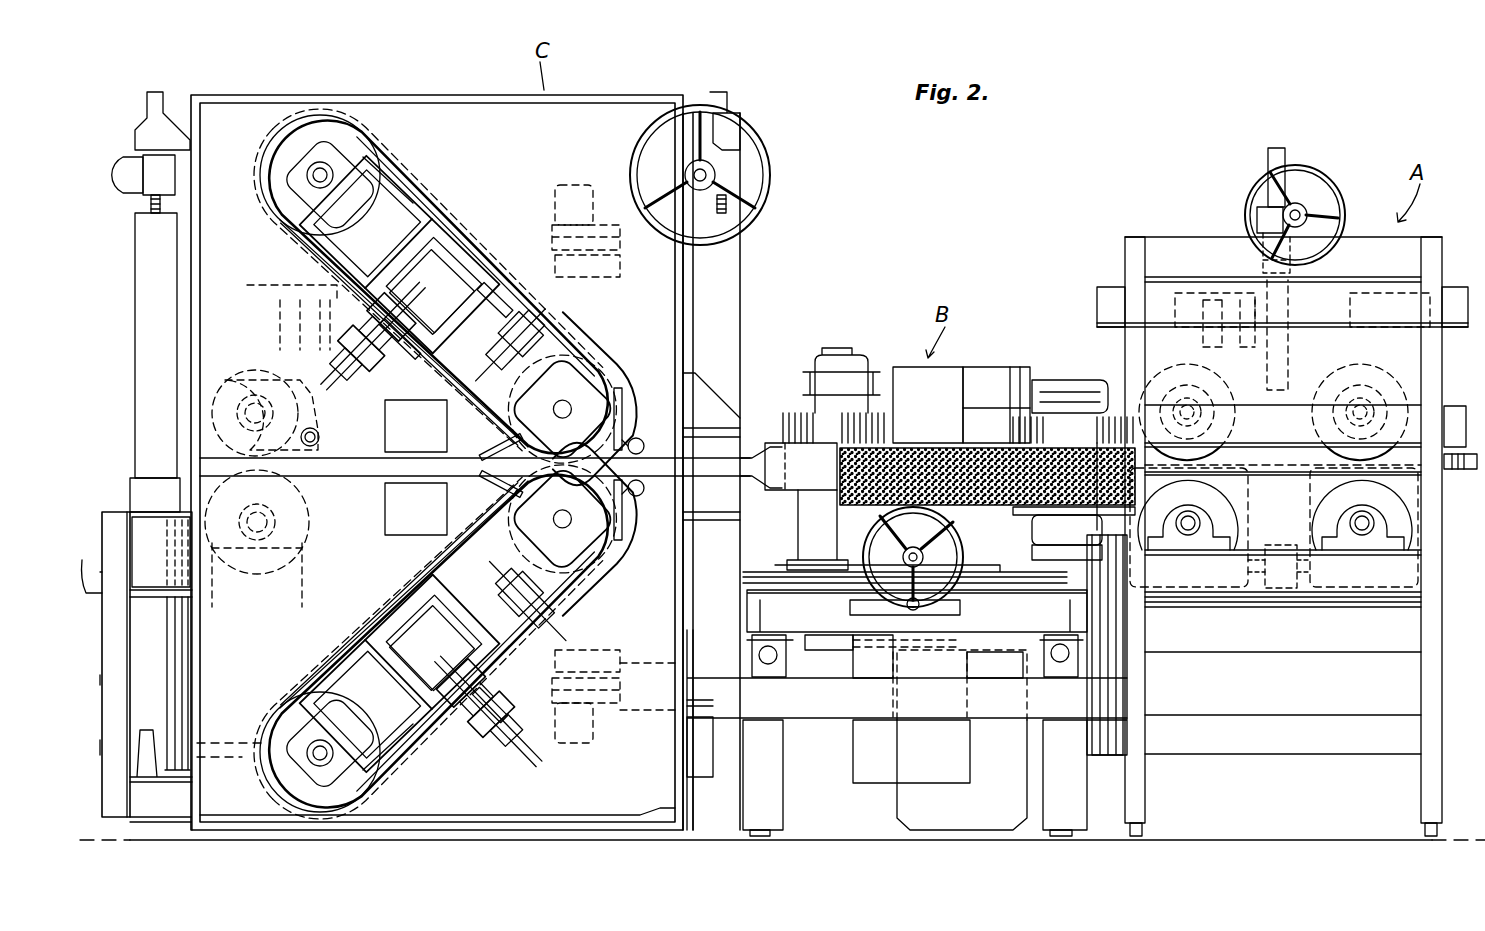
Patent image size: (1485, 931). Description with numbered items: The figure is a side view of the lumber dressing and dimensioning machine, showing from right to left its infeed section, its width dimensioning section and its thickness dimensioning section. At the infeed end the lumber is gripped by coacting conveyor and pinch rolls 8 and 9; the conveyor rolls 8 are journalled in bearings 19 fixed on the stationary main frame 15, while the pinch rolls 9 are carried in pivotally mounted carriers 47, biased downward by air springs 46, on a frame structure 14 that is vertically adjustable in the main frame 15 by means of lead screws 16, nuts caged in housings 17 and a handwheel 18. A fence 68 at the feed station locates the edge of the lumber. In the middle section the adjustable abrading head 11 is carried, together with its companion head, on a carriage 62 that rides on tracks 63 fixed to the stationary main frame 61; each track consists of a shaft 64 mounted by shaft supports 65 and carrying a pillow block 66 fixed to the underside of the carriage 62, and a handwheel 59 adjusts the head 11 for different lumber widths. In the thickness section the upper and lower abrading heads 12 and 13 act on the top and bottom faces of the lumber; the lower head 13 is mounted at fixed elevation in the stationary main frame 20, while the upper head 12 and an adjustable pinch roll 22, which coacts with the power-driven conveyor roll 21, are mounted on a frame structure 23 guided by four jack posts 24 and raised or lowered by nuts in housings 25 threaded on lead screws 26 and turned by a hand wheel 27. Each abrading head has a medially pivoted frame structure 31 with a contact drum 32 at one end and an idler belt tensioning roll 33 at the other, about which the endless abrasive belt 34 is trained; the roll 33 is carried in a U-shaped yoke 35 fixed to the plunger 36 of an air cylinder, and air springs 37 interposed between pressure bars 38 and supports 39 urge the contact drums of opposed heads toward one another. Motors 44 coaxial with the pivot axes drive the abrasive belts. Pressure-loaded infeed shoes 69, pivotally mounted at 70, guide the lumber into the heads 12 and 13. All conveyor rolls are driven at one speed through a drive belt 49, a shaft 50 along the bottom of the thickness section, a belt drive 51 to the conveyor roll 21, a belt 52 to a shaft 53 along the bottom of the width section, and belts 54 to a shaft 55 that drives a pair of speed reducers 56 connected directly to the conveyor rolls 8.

The conveyor rolls 8 is at (1320, 515).
The pinch rolls 9 is at (1240, 405).
The abrading head 11 is at (925, 460).
The upper abrading head 12 is at (488, 212).
The lower abrading head 13 is at (395, 580).
The frame structure 14 is at (1125, 370).
The main frame 15 is at (1422, 685).
The lead screws 16 is at (1280, 148).
The housings 17 is at (1262, 212).
The handwheel 18 is at (1328, 175).
The bearings 19 is at (1192, 540).
The main frame 20 is at (437, 791).
The conveyor roll 21 is at (265, 565).
The pinch roll 22 is at (238, 378).
The frame structure 23 is at (660, 298).
The jack posts 24 is at (158, 240).
The housings 25 is at (165, 172).
The lead screws 26 is at (148, 200).
The hand wheel 27 is at (740, 135).
The frame structures 31 is at (498, 298).
The contact drum 32 is at (598, 372).
The idler belt tensioning roll 33 is at (328, 128).
The endless abrasive belt 34 is at (492, 238).
The U-shaped yoke 35 is at (385, 198).
The plunger 36 is at (430, 205).
The air springs 37 is at (588, 225).
The pressure bars 38 is at (620, 270).
The supports 39 is at (588, 183).
The motors 44 is at (385, 548).
The air springs 46 is at (300, 300).
The carriers 47 is at (428, 372).
The drive belt 49 is at (112, 664).
The shaft 50 is at (230, 757).
The belt drive 51 is at (185, 668).
The belt 52 is at (700, 770).
The shaft 53 is at (835, 733).
The belts 54 is at (1100, 758).
The shaft 55 is at (1290, 585).
The speed reducers 56 is at (1180, 580).
The handwheel 59 is at (950, 583).
The main frame 61 is at (830, 722).
The carriage 62 is at (945, 640).
The tracks 63 is at (770, 645).
The shaft 64 is at (795, 655).
The shaft supports 65 is at (778, 678).
The pillow block 66 is at (1040, 650).
The fence 68 is at (768, 440).
The infeed shoes 69 is at (622, 405).
The pivotal mounting 70 is at (642, 448).